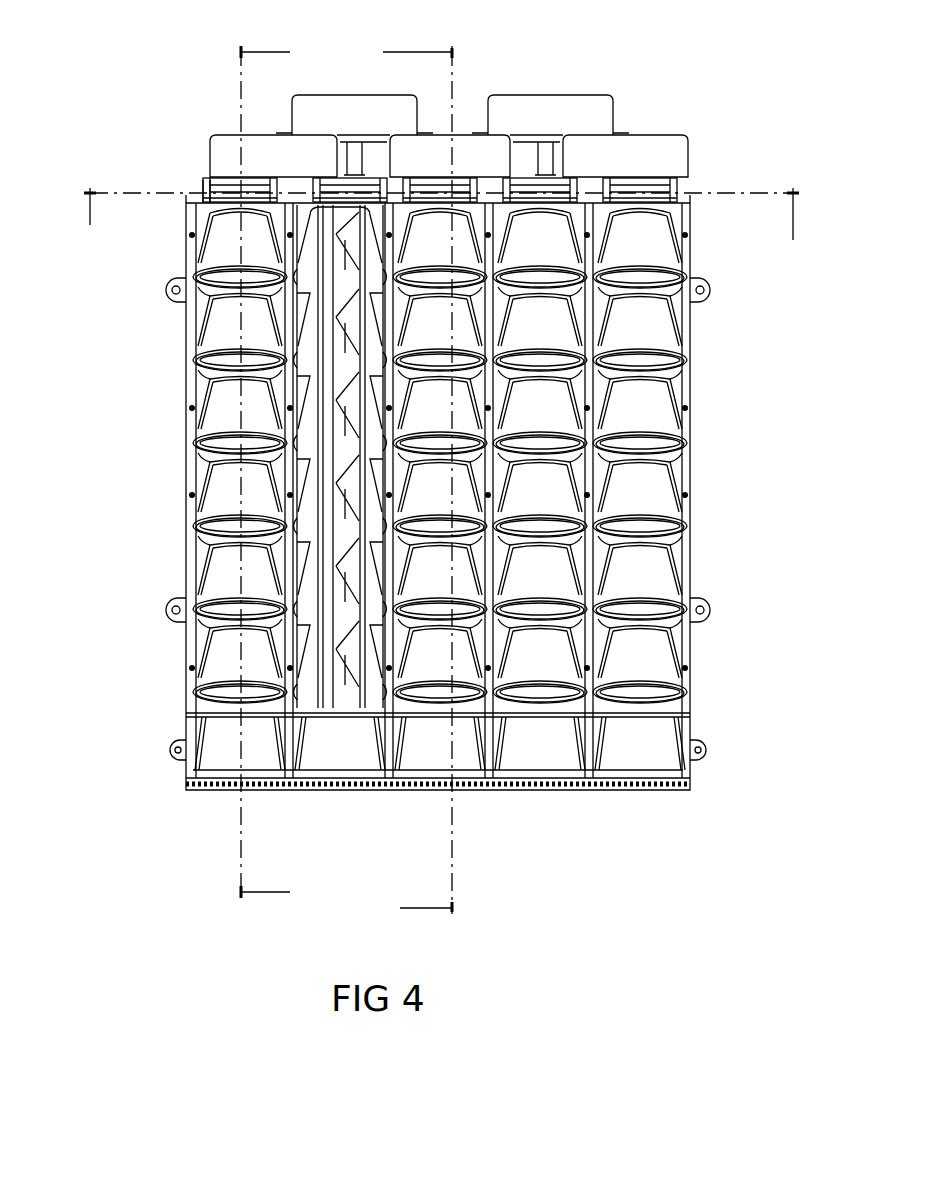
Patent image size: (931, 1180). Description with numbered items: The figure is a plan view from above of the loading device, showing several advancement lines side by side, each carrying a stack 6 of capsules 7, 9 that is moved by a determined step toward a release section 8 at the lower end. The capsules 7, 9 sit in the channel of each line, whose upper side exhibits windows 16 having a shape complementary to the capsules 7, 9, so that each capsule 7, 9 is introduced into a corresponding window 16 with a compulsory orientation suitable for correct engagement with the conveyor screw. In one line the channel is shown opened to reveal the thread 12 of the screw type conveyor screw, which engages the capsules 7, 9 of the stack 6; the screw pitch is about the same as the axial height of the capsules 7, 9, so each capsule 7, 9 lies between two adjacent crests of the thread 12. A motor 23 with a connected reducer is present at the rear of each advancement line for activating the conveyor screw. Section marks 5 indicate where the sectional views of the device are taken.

The section line 5- 5 is at (432, 231).
The stack 6 is at (269, 492).
The capsule 7 is at (647, 578).
The release section 8 is at (650, 764).
The capsule 9 is at (653, 660).
The thread 12 is at (347, 397).
The window 16 is at (307, 637).
The motor 23 is at (408, 160).